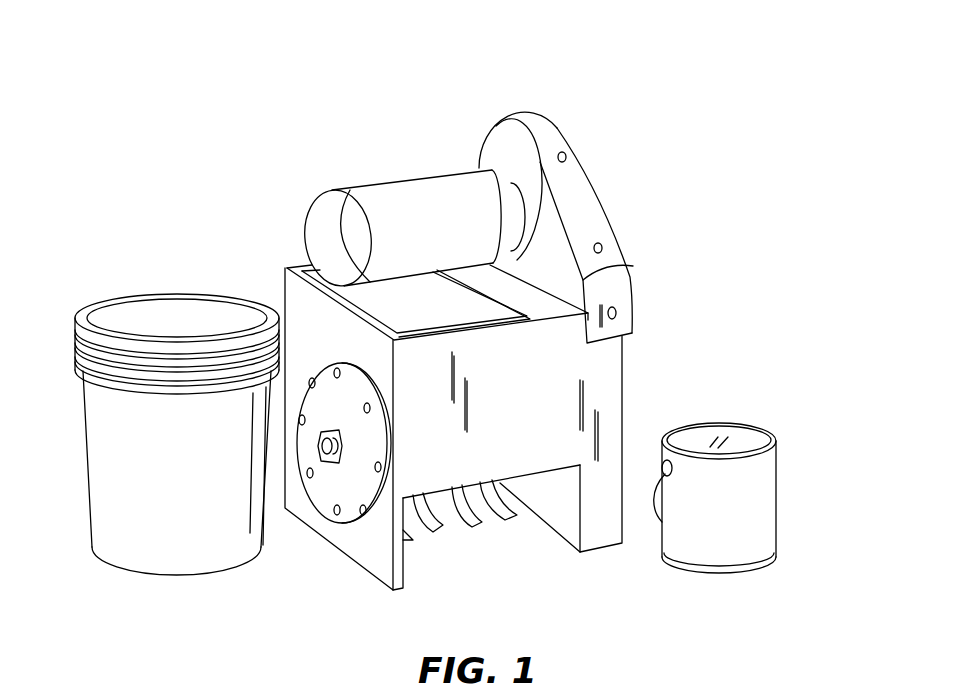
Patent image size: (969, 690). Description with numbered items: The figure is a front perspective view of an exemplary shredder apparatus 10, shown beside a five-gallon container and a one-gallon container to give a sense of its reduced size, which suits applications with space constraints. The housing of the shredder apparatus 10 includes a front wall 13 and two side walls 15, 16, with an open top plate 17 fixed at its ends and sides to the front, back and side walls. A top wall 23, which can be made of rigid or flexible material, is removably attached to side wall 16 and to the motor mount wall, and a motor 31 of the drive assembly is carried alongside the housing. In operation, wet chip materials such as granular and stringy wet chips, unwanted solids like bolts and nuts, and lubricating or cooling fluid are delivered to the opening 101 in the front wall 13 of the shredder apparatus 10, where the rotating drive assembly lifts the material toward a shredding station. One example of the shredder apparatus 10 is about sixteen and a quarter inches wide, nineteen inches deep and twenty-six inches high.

The shredder apparatus 10 is at (462, 63).
The motor 31 is at (377, 187).
The side wall 15 is at (295, 290).
The top wall 23 is at (602, 218).
The open top plate 17 is at (540, 306).
The side wall 16 is at (628, 360).
The front wall 13 is at (610, 407).
The opening 101 is at (482, 543).